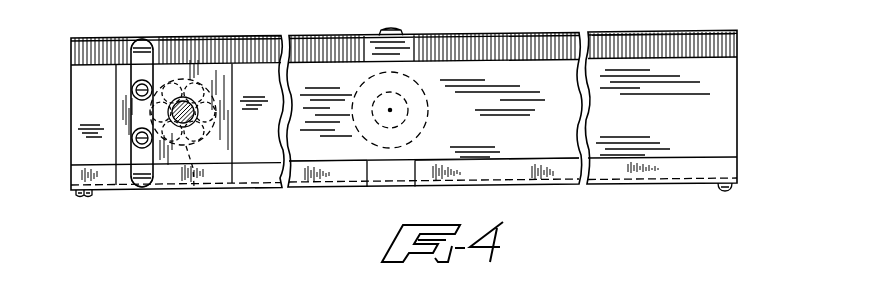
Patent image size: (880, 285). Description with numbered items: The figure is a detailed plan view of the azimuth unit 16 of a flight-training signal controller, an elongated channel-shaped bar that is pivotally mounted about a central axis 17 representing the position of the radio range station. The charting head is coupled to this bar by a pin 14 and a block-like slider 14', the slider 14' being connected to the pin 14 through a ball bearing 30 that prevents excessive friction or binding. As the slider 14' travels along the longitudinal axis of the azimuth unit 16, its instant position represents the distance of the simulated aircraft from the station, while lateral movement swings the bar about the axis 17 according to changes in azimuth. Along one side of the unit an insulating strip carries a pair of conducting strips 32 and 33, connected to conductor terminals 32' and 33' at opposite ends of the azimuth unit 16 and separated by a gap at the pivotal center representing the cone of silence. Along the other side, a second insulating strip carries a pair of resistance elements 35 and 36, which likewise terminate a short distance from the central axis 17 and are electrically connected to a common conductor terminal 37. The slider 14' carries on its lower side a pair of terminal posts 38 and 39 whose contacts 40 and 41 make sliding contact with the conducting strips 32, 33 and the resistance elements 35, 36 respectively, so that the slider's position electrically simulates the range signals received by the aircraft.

The pin 14 is at (204, 112).
The slider 14' is at (94, 113).
The azimuth unit 16 is at (66, 139).
The axis 17 is at (390, 110).
The ball bearing 30 is at (194, 187).
The conducting strip 32 is at (328, 189).
The conductor terminal 32' is at (65, 205).
The conducting strip 33 is at (499, 188).
The conductor terminal 33' is at (703, 199).
The resistance element 35 is at (197, 47).
The resistance element 36 is at (685, 43).
The common conductor terminal 37 is at (398, 28).
The terminal post 38 is at (132, 140).
The terminal post 39 is at (132, 92).
The contact 40 is at (145, 190).
The contact 41 is at (156, 19).